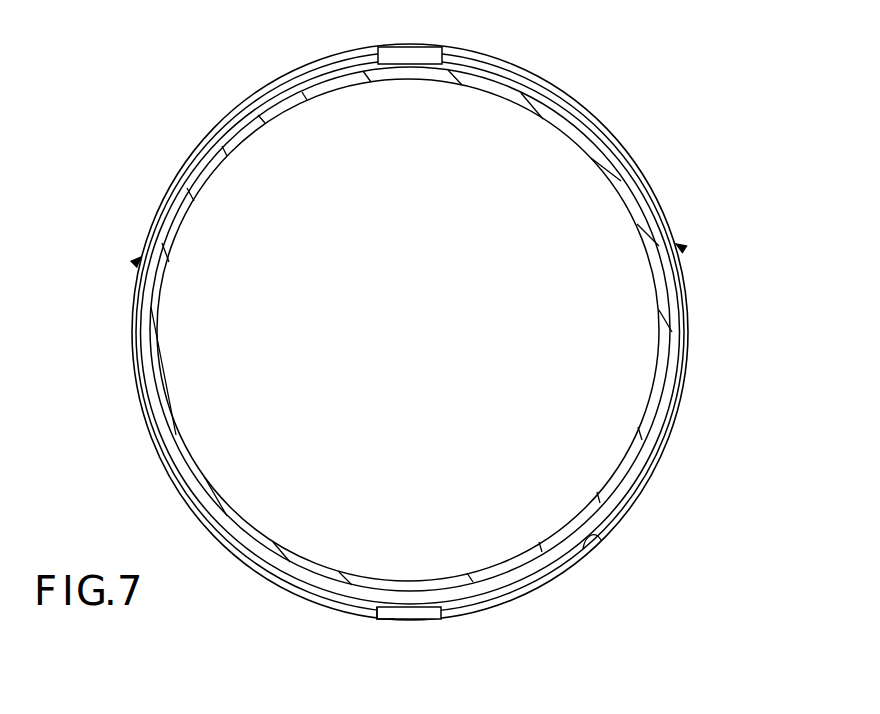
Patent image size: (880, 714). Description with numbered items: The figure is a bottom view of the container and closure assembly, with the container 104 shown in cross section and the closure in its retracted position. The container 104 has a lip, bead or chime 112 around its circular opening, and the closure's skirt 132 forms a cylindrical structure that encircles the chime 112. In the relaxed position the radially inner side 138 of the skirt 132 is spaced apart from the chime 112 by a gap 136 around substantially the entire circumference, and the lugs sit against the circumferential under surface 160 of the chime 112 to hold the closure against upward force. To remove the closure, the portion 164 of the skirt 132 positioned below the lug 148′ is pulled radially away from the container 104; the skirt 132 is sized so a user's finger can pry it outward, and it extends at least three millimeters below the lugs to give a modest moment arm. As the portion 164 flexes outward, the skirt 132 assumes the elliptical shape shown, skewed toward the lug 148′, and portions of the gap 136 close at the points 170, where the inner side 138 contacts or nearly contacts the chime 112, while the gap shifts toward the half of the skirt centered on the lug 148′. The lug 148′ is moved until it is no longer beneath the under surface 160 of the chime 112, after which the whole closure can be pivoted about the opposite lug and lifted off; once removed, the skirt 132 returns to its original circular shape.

The container 104 is at (433, 577).
The chime 112 is at (630, 483).
The circumferential under surface of the chime 160 is at (768, 481).
The skirt 132 is at (683, 433).
The gap 136 is at (612, 515).
The radially inner side of the skirt 138 is at (603, 540).
The lug 148′ is at (420, 612).
The portion of the skirt 164 is at (387, 620).
The points 170 is at (140, 258).